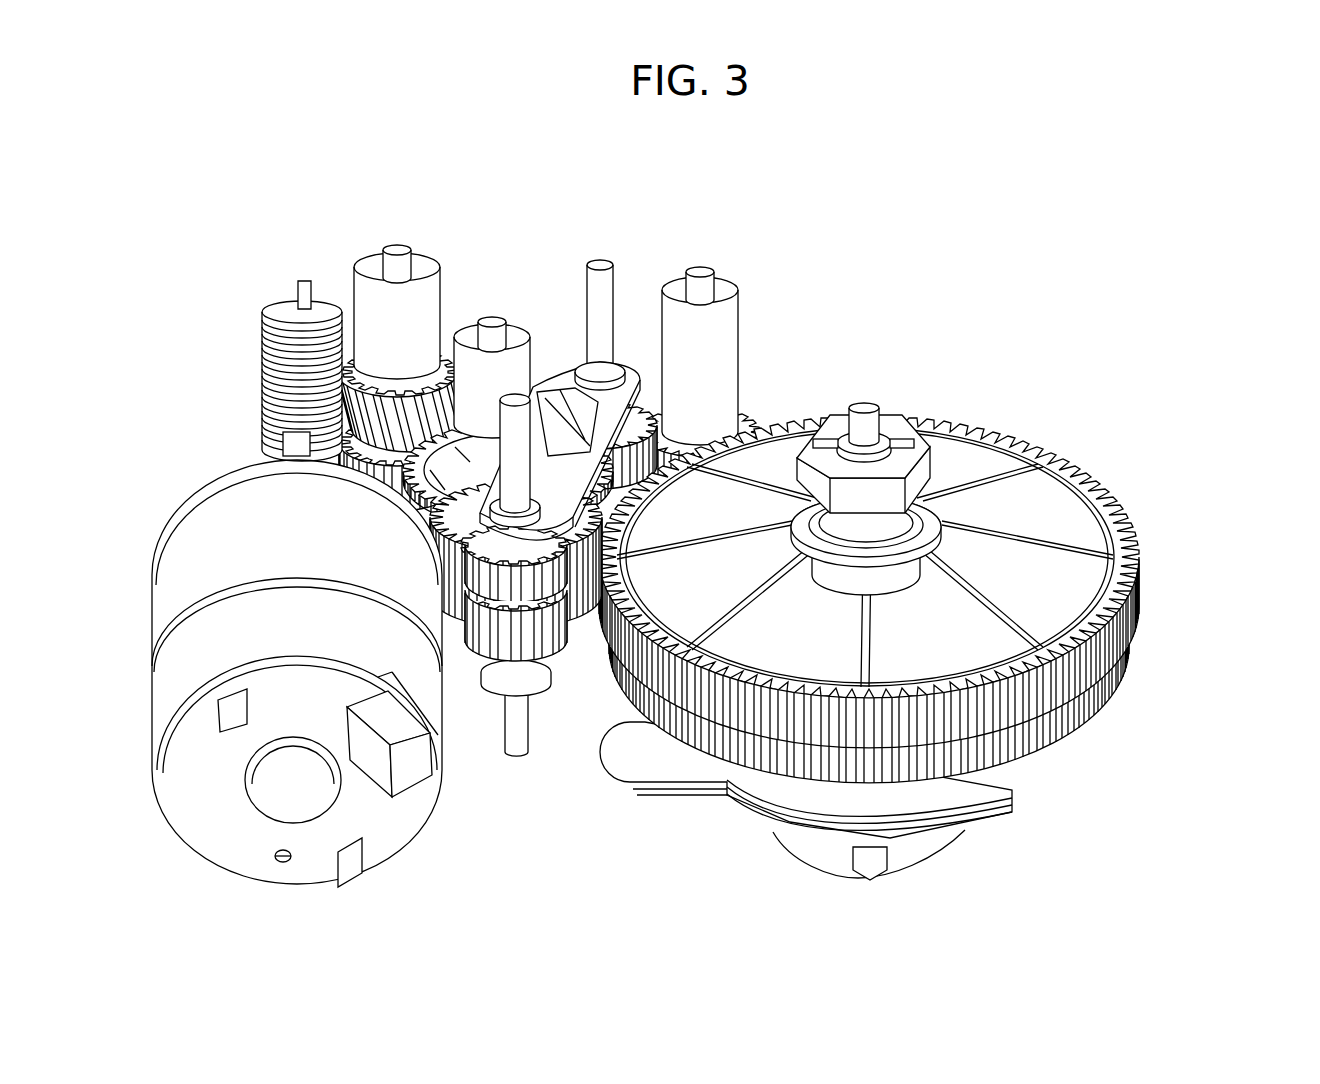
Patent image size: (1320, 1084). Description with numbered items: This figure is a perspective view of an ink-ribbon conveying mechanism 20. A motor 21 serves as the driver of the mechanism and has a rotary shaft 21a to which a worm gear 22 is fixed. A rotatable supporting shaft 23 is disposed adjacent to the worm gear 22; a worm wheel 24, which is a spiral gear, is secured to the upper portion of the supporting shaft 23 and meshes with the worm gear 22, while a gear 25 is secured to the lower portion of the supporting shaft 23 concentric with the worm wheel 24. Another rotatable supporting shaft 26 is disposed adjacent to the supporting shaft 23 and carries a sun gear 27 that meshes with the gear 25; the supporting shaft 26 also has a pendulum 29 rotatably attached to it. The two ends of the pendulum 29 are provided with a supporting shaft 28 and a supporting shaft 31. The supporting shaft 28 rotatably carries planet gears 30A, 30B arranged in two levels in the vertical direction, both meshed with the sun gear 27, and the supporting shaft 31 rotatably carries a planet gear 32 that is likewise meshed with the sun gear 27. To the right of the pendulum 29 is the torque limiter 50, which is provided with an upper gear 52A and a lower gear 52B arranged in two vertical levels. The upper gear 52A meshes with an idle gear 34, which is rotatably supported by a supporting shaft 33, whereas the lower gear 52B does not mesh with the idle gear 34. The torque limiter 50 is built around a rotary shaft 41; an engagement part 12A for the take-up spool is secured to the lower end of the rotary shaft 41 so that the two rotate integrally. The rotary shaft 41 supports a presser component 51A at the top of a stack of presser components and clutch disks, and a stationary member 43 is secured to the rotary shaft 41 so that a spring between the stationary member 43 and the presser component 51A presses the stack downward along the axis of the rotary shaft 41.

The ink-ribbon conveying mechanism 20 is at (1004, 296).
The motor 21 is at (240, 860).
The rotary shaft 21a is at (312, 300).
The worm gear 22 is at (270, 355).
The supporting shaft 23 is at (394, 263).
The worm wheel 24 is at (444, 325).
The gear 25 is at (372, 466).
The supporting shaft 26 is at (489, 334).
The sun gear 27 is at (423, 524).
The supporting shaft 28 is at (517, 750).
The pendulum 29 is at (552, 374).
The planet gear 30A is at (468, 600).
The planet gear 30B is at (569, 648).
The supporting shaft 31 is at (601, 268).
The planet gear 32 is at (637, 395).
The supporting shaft 33 is at (706, 286).
The idle gear 34 is at (746, 412).
The rotary shaft 41 is at (866, 410).
The stationary member 43 is at (932, 466).
The torque limiter 50 is at (920, 548).
The presser component 51A is at (1063, 503).
The upper gear 52A is at (1128, 518).
The lower gear 52B is at (1135, 675).
The engagement part 12A is at (911, 850).